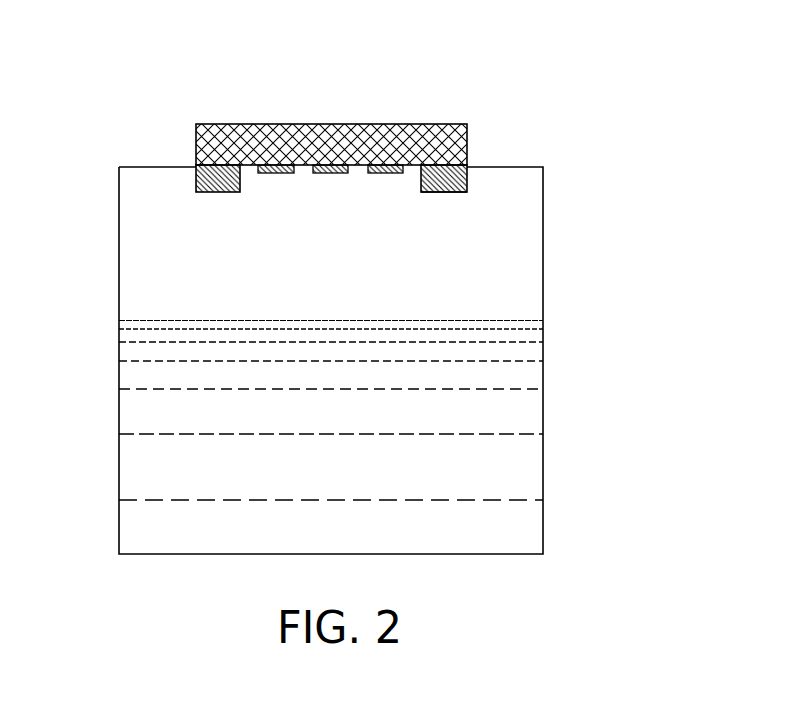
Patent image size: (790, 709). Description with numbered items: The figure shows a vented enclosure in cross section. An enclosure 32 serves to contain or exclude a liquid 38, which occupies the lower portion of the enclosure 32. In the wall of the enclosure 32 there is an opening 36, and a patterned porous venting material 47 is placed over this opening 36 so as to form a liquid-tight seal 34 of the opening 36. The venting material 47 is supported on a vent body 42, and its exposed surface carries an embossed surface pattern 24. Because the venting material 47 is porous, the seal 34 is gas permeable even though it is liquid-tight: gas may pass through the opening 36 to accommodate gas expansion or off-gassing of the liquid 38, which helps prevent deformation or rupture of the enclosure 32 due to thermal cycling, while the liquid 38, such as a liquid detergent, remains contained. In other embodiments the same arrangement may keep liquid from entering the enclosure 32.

The venting material 47 is at (205, 124).
The embossed surface pattern 24 is at (342, 164).
The liquid-tight seal 34 is at (467, 181).
The vent body 42 is at (450, 192).
The opening 36 is at (304, 189).
The enclosure 32 is at (543, 269).
The liquid 38 is at (510, 464).